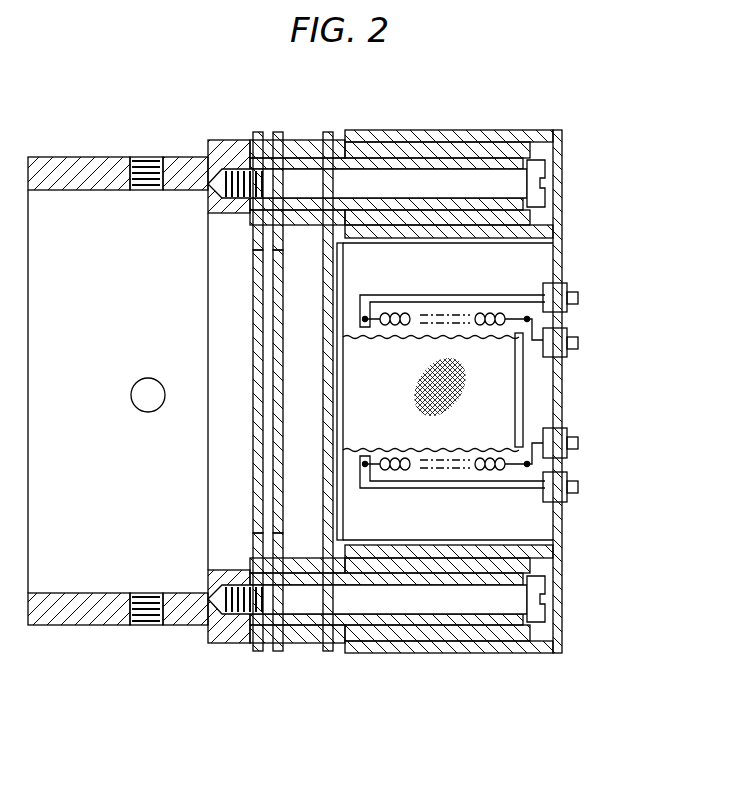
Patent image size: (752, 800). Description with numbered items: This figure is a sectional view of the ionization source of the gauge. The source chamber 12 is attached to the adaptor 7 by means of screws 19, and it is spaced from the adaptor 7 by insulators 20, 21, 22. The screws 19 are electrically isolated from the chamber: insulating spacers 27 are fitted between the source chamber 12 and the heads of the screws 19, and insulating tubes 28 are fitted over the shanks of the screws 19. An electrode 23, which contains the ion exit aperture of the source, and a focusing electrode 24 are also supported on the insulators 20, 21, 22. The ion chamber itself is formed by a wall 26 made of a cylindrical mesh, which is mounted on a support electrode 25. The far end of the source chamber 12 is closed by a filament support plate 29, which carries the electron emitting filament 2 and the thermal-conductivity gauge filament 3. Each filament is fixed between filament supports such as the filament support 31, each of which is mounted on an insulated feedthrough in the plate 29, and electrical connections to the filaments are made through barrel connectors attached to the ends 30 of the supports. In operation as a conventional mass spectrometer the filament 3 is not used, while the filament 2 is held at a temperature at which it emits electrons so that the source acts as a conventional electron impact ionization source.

The electron emitting filament 2 is at (405, 478).
The thermal-conductivity gauge filament 3 is at (405, 325).
The adaptor 7 is at (61, 162).
The source chamber 12 is at (357, 135).
The screws 19 is at (454, 178).
The insulator 20 is at (268, 650).
The insulator 21 is at (308, 650).
The insulator 22 is at (342, 650).
The electrode 23 is at (253, 498).
The focusing electrode 24 is at (277, 540).
The support electrode 25 is at (345, 268).
The wall 26 is at (352, 448).
The insulating spacers 27 is at (404, 143).
The insulating tubes 28 is at (288, 150).
The filament support plate 29 is at (560, 130).
The ends of the supports 30 is at (580, 344).
The filament support 31 is at (522, 296).